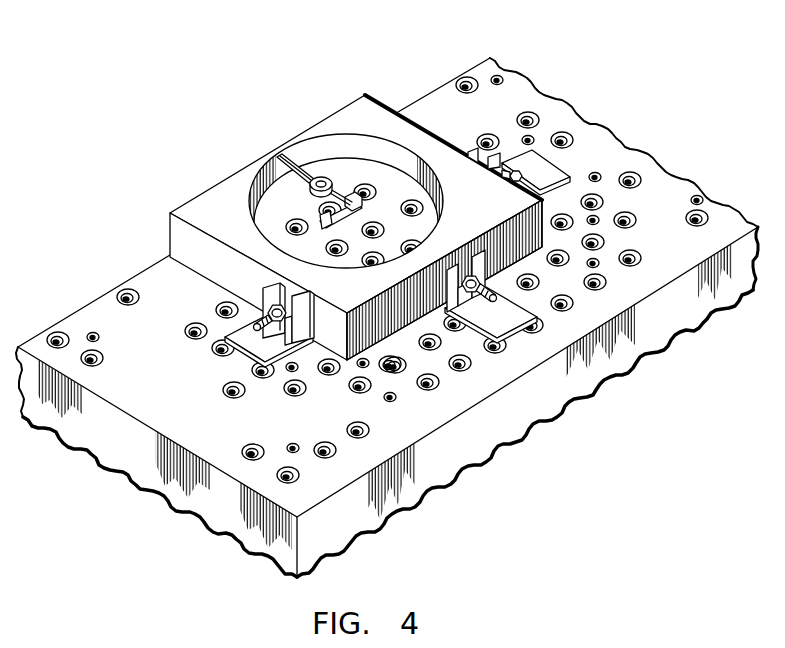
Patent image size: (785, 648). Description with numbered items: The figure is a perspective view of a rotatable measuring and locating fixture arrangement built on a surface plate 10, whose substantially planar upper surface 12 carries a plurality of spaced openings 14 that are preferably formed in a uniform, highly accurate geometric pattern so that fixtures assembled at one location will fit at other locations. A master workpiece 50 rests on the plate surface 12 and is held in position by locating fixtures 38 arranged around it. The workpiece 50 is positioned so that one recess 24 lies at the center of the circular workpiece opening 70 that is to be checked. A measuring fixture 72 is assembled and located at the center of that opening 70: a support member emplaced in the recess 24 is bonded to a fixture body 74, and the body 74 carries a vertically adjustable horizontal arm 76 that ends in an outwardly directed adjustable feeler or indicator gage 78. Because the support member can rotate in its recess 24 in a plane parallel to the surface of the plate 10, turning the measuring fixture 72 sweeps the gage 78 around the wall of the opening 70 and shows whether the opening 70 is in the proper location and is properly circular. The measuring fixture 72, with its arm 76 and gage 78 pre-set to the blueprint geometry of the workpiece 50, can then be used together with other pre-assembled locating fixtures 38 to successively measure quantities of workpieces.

The surface plate 10 is at (123, 453).
The upper surface 12 is at (117, 387).
The openings 14 is at (250, 458).
The recess 24 is at (246, 458).
The locating fixtures 38 is at (225, 337).
The master workpiece 50 is at (387, 105).
The circular workpiece opening 70 is at (252, 187).
The measuring fixture 72 is at (392, 182).
The fixture body 74 is at (292, 207).
The horizontal arm 76 is at (333, 180).
The feeler or indicator gage 78 is at (318, 178).